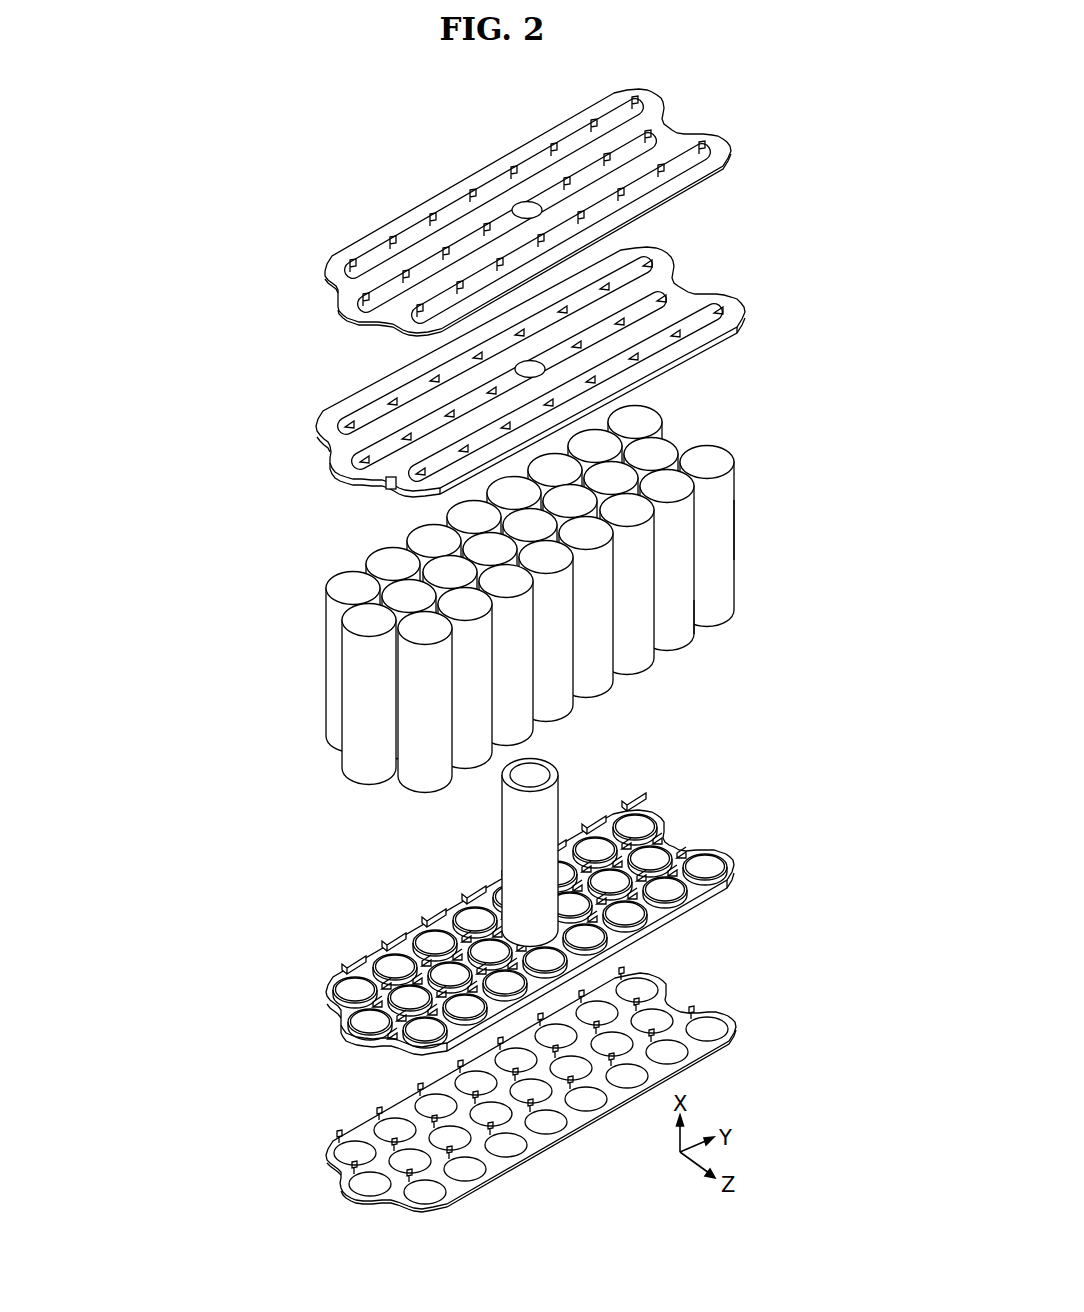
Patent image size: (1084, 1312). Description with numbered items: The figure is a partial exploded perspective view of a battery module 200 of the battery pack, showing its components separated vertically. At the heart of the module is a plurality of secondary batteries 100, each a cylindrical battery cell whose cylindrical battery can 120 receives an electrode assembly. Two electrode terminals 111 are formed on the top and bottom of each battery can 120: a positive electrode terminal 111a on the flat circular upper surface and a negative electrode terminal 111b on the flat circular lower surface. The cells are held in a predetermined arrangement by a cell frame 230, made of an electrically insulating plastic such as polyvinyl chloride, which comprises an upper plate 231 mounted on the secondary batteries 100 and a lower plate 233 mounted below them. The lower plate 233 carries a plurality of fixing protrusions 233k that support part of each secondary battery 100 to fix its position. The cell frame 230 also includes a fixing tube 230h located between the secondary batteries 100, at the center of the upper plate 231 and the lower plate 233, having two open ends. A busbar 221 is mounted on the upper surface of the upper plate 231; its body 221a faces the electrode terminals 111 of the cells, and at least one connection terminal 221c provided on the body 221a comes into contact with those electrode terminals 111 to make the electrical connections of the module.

The battery module 200 is at (313, 118).
The busbar 221 is at (546, 650).
The body 221a is at (466, 192).
The connection terminal 221c is at (517, 180).
The cell frame 230 is at (237, 416).
The upper plate 231 is at (707, 250).
The lower plate 233 is at (510, 700).
The fixing tube 230h is at (528, 370).
The fixing protrusions 233k is at (700, 346).
The secondary battery 100 is at (502, 599).
The electrode terminals 111 is at (237, 511).
The positive electrode terminal 111a is at (713, 455).
The negative electrode terminal 111b is at (720, 631).
The battery can 120 is at (722, 527).